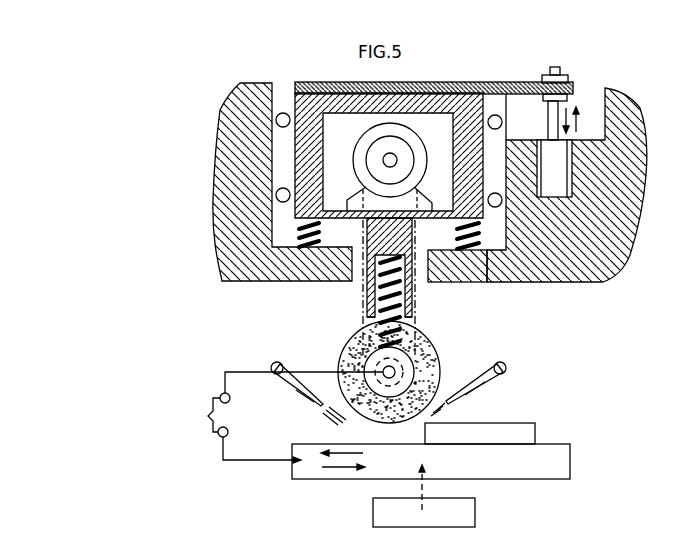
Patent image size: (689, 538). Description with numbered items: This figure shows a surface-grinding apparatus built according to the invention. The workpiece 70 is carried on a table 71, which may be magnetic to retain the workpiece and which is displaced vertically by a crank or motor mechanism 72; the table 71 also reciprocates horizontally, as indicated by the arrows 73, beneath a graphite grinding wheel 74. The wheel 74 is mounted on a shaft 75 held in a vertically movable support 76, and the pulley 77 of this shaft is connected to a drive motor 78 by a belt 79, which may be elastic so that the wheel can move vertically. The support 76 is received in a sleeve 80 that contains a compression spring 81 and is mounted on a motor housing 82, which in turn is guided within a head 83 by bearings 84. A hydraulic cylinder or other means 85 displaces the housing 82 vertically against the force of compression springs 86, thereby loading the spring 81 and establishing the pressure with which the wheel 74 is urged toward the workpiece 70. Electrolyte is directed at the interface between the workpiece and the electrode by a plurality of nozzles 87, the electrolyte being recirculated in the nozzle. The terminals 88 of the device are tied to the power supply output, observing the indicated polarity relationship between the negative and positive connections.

The workpiece 70 is at (512, 430).
The table 71 is at (568, 477).
The crank or motor mechanism 72 is at (475, 520).
The arrows 73 is at (335, 460).
The graphite grinding wheel 74 is at (438, 354).
The shaft 75 is at (389, 380).
The vertically movable support 76 is at (368, 314).
The pulley 77 is at (362, 365).
The drive motor 78 is at (366, 142).
The belt 79 is at (365, 286).
The sleeve 80 is at (412, 295).
The compression spring 81 is at (410, 258).
The motor housing 82 is at (286, 113).
The head 83 is at (578, 270).
The bearings 84 is at (277, 120).
The hydraulic cylinder 85 is at (578, 140).
The compression springs 86 is at (485, 284).
The nozzles 87 is at (298, 392).
The terminals 88 is at (279, 417).